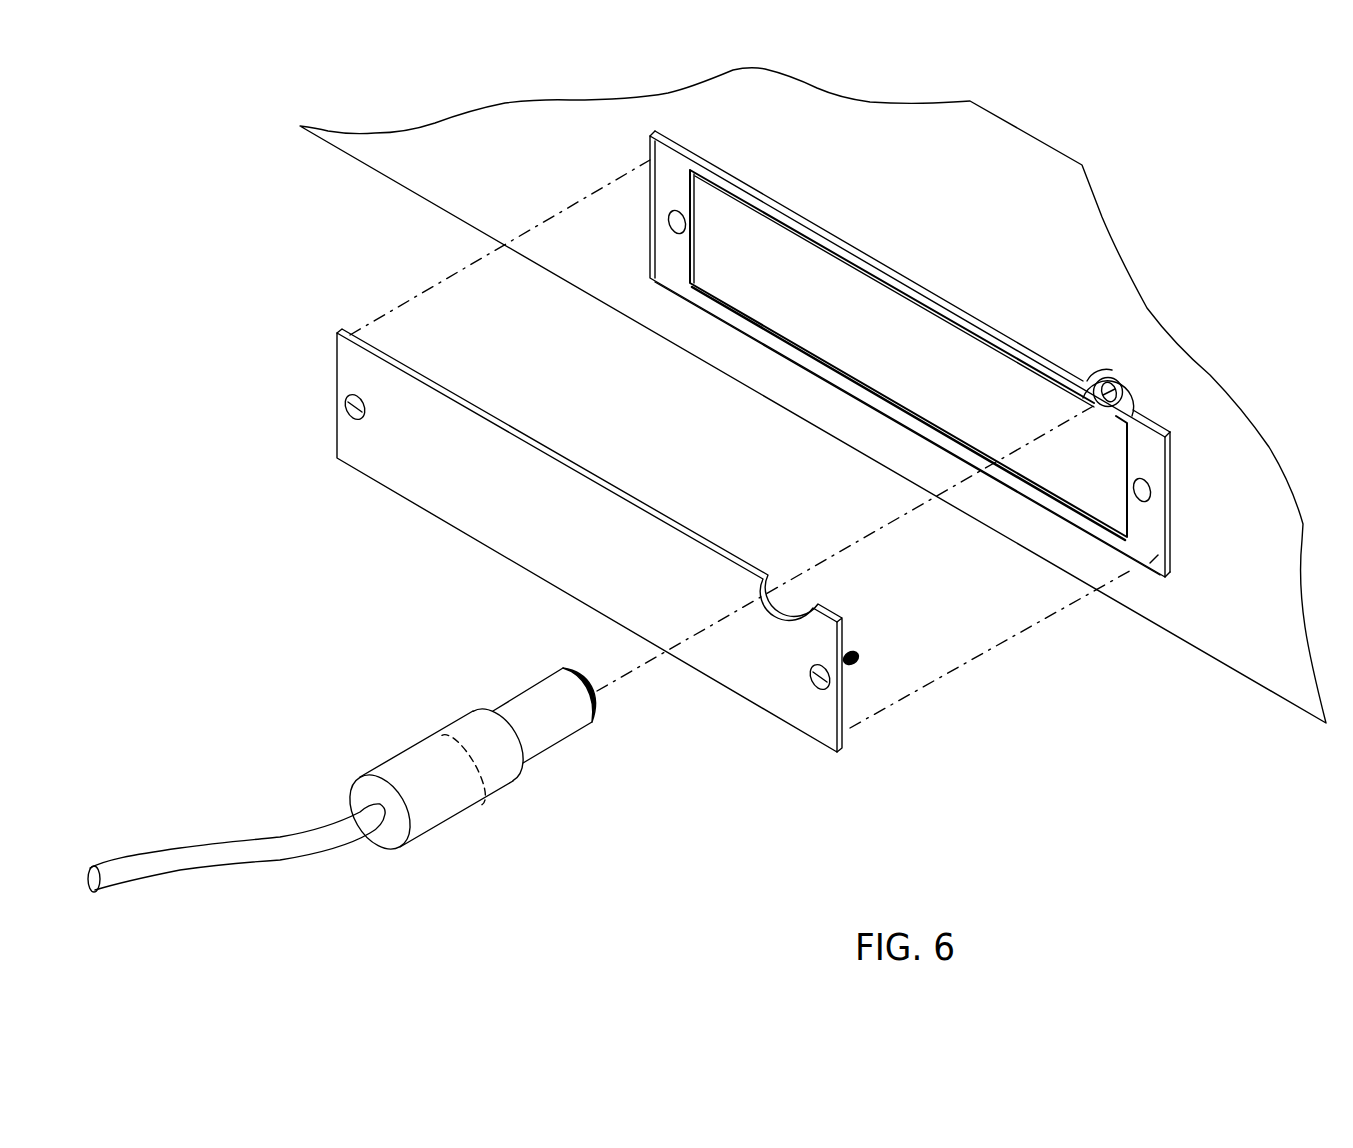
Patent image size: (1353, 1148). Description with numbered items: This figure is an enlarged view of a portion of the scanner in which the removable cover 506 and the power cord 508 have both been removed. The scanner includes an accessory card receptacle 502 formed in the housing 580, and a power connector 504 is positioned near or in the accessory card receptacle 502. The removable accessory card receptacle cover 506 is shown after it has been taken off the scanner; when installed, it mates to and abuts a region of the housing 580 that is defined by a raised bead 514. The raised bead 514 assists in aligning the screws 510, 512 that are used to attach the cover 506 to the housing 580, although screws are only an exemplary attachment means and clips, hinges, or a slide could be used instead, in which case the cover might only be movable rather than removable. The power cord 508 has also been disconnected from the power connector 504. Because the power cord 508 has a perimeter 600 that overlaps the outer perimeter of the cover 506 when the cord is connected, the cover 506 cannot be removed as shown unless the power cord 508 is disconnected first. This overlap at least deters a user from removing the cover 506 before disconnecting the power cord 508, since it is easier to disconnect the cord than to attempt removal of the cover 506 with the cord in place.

The housing 580 is at (318, 127).
The accessory card receptacle 502 is at (910, 354).
The raised bead 514 is at (822, 228).
The power connector 504 is at (1107, 418).
The removable accessory card receptacle cover 506 is at (595, 540).
The screw 510 is at (349, 416).
The screw 512 is at (855, 663).
The perimeter 600 is at (445, 737).
The power cord 508 is at (210, 866).